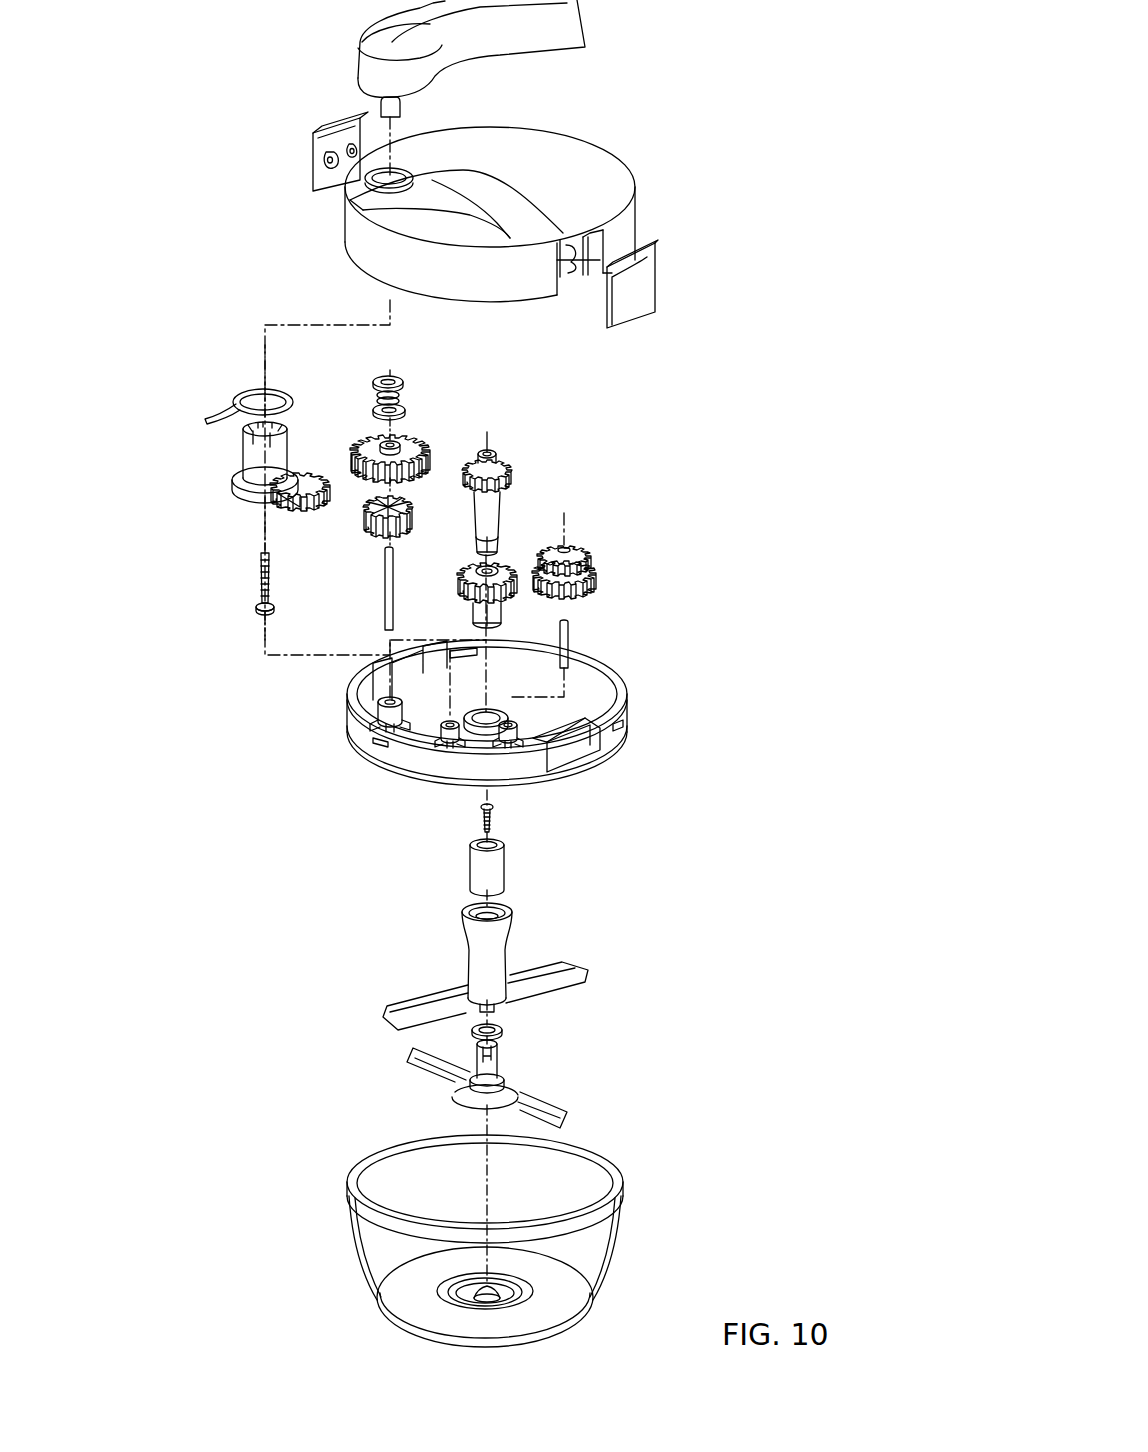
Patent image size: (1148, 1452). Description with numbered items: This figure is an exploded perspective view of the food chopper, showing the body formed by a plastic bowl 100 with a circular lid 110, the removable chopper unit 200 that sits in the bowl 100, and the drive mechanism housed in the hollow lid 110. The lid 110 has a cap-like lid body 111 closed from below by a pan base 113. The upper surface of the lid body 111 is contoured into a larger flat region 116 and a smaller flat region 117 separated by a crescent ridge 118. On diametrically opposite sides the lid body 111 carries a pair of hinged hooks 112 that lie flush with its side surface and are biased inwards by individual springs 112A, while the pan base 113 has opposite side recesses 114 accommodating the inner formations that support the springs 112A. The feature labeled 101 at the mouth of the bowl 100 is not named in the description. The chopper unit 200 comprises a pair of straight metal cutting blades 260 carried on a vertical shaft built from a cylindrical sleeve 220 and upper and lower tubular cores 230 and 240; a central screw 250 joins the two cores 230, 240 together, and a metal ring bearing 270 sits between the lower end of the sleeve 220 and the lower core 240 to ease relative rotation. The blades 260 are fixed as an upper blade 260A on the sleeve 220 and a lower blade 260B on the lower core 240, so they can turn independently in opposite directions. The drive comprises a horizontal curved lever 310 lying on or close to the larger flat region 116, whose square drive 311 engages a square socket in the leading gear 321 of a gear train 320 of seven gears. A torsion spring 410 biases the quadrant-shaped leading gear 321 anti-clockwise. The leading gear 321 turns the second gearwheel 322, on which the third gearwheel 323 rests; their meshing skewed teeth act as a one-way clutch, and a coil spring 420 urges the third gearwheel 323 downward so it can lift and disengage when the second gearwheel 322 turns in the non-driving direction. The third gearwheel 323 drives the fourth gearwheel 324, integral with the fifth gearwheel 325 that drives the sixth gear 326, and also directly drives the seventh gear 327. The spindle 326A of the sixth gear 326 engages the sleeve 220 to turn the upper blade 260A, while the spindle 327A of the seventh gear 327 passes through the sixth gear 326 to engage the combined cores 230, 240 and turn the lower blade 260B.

The bowl 100 is at (523, 1224).
The bowl rim 101 is at (612, 1176).
The lid 110 is at (475, 456).
The lid body 111 is at (510, 195).
The hinged hooks 112 is at (315, 157).
The springs 112A is at (580, 240).
The pan base 113 is at (546, 732).
The side recesses 114 is at (565, 748).
The larger flat region 116 is at (552, 158).
The smaller flat region 117 is at (415, 221).
The crescent ridge 118 is at (470, 180).
The chopper unit 200 is at (651, 946).
The sleeve 220 is at (495, 956).
The upper core 230 is at (482, 870).
The lower core 240 is at (492, 1068).
The central screw 250 is at (495, 818).
The cutting blades 260 is at (430, 1045).
The upper blade 260A is at (402, 1015).
The lower blade 260B is at (433, 1063).
The ring bearing 270 is at (498, 1028).
The lever 310 is at (558, 24).
The square drive 311 is at (398, 104).
The gear train 320 is at (647, 452).
The leading gear 321 is at (312, 470).
The second gearwheel 322 is at (372, 532).
The third gearwheel 323 is at (408, 438).
The fourth gearwheel 324 is at (585, 549).
The fifth gearwheel 325 is at (600, 578).
The sixth gear 326 is at (457, 596).
The spindle 326A is at (476, 617).
The seventh gear 327 is at (531, 473).
The spindle 327A is at (492, 510).
The torsion spring 410 is at (240, 398).
The coil spring 420 is at (402, 395).